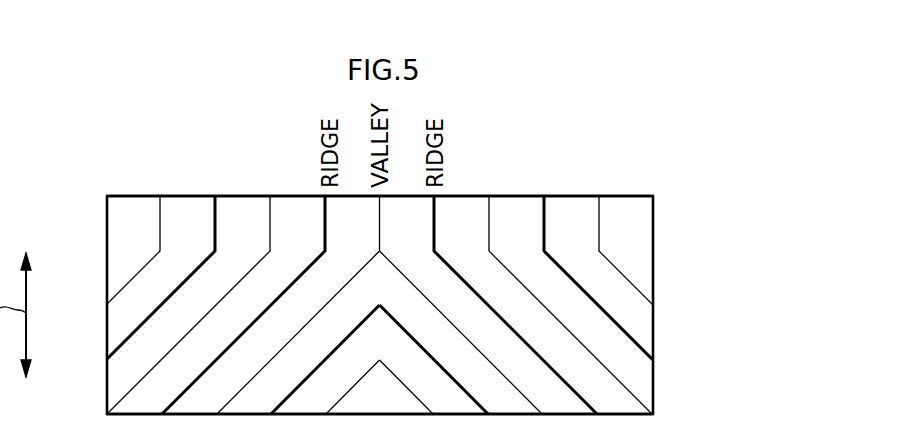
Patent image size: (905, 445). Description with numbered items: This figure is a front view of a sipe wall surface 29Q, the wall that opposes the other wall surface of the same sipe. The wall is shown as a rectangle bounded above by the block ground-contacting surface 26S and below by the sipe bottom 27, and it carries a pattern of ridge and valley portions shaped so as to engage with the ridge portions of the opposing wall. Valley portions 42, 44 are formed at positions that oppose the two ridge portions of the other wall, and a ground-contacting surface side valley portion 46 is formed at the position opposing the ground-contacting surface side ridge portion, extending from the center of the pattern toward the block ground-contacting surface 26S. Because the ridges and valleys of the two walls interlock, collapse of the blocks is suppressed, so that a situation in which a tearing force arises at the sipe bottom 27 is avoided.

The sipe wall surface 29Q is at (632, 126).
The block ground-contacting surface 26S is at (517, 196).
The sipe bottom 27 is at (563, 414).
The valley portion 42 is at (428, 296).
The valley portion 44 is at (345, 285).
The ground-contacting surface side valley portion 46 is at (379, 228).